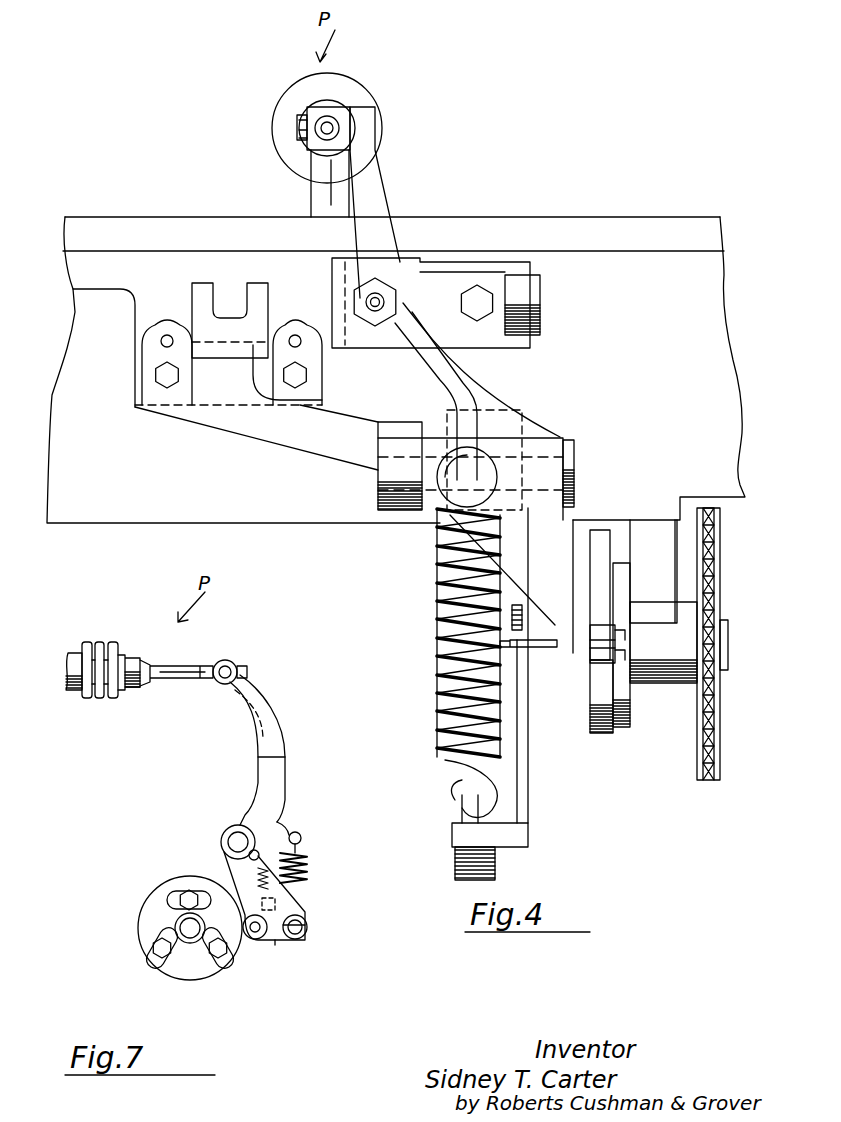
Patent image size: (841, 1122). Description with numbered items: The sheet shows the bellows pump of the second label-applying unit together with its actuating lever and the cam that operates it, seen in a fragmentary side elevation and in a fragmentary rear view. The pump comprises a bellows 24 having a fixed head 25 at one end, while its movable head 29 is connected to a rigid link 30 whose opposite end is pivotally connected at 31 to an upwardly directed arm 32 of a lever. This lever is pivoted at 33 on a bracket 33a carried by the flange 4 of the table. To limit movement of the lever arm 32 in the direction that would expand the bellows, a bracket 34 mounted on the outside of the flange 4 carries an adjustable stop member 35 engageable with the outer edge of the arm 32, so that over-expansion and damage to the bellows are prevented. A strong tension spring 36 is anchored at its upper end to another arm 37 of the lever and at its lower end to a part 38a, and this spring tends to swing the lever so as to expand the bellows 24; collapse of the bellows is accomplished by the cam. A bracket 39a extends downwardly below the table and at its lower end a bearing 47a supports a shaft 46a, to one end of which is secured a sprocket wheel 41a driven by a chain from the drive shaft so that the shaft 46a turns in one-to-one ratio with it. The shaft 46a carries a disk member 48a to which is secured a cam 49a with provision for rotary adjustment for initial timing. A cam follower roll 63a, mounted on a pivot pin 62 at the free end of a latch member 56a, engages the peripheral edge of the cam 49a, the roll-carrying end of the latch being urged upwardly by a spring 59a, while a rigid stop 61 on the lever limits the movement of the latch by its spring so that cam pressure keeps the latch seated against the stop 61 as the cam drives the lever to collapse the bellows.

In FIG. 4, the flange 4 is at (136, 511).
In FIG. 4, the movable head 29 is at (346, 95).
In FIG. 4, the pivotal connection 31 is at (300, 125).
In FIG. 4, the upwardly directed arm 32 is at (372, 190).
In FIG. 7, the upwardly directed arm 32 is at (273, 710).
In FIG. 4, the bracket 34 is at (332, 276).
In FIG. 4, the adjustable stop member 35 is at (378, 297).
In FIG. 4, the bracket 33a is at (336, 460).
In FIG. 4, the pivot 33 is at (576, 467).
In FIG. 7, the pivot 33 is at (236, 838).
In FIG. 4, the bracket 39a is at (655, 535).
In FIG. 4, the cam follower roll 63a is at (605, 625).
In FIG. 7, the cam follower roll 63a is at (254, 878).
In FIG. 4, the shaft 46a is at (728, 642).
In FIG. 7, the shaft 46a is at (190, 936).
In FIG. 4, the bearing 47a is at (660, 670).
In FIG. 4, the disk member 48a is at (621, 728).
In FIG. 4, the cam 49a is at (600, 705).
In FIG. 7, the cam 49a is at (152, 905).
In FIG. 4, the sprocket wheel 41a is at (710, 775).
In FIG. 4, the tension spring 36 is at (437, 700).
In FIG. 7, the tension spring 36 is at (308, 868).
In FIG. 4, the spring anchoring part 38a is at (528, 835).
In FIG. 7, the fixed head 25 is at (73, 662).
In FIG. 7, the bellows 24 is at (106, 648).
In FIG. 7, the rigid link 30 is at (178, 666).
In FIG. 7, the lever arm 37 is at (289, 835).
In FIG. 7, the spring 59a is at (272, 884).
In FIG. 7, the rigid stop 61 is at (272, 903).
In FIG. 7, the pivot pin 62 is at (253, 932).
In FIG. 7, the latch member 56a is at (276, 937).